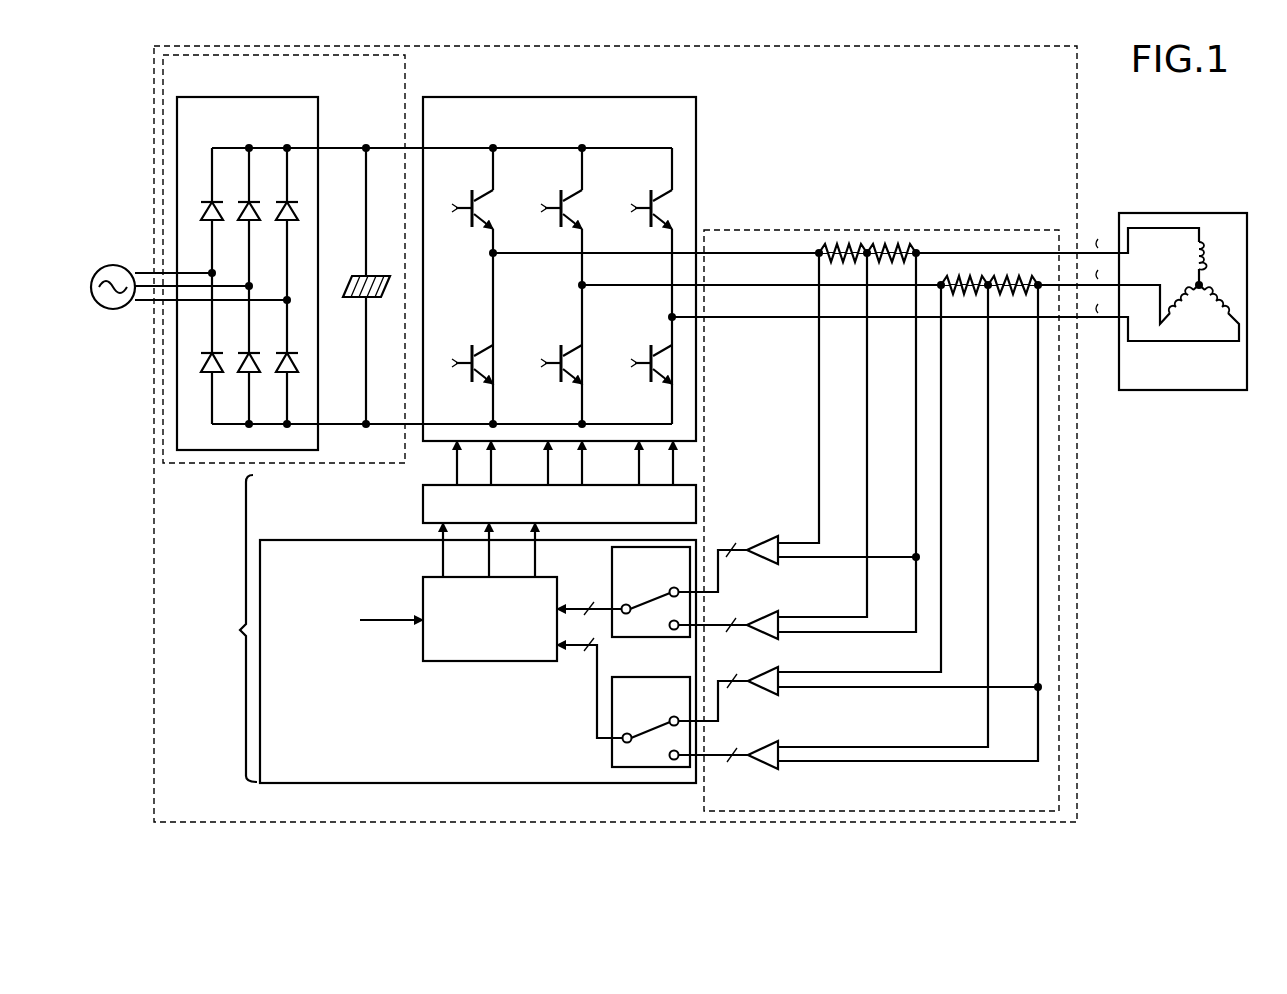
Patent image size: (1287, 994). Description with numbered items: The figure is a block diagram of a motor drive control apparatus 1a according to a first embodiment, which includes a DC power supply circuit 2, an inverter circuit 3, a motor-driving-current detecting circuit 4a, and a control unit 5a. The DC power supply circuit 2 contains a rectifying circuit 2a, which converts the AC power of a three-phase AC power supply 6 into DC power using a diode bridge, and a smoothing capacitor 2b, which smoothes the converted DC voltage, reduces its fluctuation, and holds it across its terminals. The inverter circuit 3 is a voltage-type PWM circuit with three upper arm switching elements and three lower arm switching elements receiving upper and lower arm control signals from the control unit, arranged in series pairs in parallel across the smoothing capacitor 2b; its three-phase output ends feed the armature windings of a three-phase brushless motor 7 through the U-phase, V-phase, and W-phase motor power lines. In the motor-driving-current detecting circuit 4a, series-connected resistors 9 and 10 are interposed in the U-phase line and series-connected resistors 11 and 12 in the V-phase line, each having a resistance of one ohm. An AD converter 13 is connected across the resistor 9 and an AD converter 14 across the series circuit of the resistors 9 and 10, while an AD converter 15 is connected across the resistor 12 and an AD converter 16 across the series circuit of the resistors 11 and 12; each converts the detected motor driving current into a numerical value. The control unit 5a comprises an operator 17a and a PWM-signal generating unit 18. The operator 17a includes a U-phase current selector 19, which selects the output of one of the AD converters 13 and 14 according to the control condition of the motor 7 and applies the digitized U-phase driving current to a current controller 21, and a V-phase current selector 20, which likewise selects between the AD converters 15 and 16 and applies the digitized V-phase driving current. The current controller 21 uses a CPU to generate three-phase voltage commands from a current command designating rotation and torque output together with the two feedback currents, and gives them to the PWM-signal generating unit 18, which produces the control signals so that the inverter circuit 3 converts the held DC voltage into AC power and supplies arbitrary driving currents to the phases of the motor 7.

The motor drive control apparatus 1a is at (154, 792).
The DC power supply circuit 2 is at (405, 77).
The rectifying circuit 2a is at (318, 113).
The smoothing capacitor 2b is at (351, 276).
The inverter circuit 3 is at (696, 112).
The motor-driving-current detecting circuit 4a is at (704, 793).
The control unit 5a is at (236, 632).
The three-phase AC power supply 6 is at (116, 266).
The three-phase brushless motor 7 is at (1207, 213).
The resistor for U-phase current detection 9 is at (892, 243).
The resistor for U-phase current detection 10 is at (845, 243).
The resistor for V-phase current detection 11 is at (1015, 276).
The resistor for V-phase current detection 12 is at (966, 276).
The U-phase AD converter 13 is at (775, 612).
The U-phase AD converter 14 is at (758, 541).
The V-phase AD converter 15 is at (778, 742).
The V-phase AD converter 16 is at (778, 668).
The operator 17a is at (300, 540).
The PWM-signal generating unit 18 is at (423, 505).
The U-phase current selector 19 is at (660, 637).
The V-phase current selector 20 is at (622, 677).
The current controller 21 is at (503, 661).